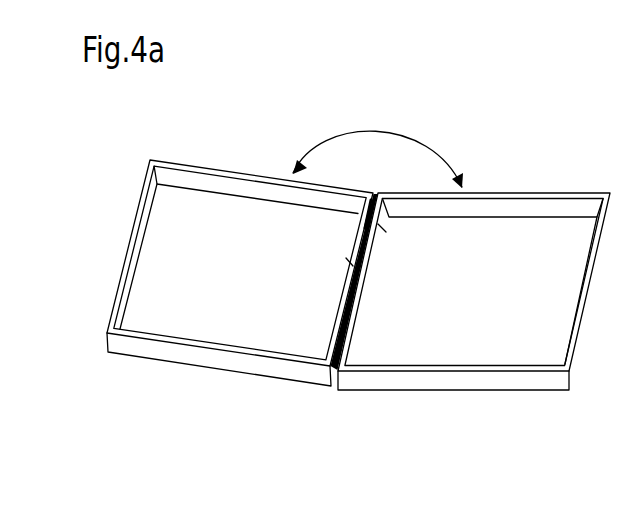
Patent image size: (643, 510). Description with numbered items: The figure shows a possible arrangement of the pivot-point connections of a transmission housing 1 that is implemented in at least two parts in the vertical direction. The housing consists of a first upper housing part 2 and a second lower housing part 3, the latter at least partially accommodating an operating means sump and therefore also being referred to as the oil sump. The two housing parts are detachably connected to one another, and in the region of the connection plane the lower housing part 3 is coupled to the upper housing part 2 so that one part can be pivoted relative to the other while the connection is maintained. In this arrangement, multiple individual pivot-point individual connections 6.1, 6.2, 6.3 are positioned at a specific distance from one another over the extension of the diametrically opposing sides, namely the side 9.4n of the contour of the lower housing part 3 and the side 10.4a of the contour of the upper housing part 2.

The transmission housing 1 is at (484, 109).
The first upper housing part 2 is at (250, 175).
The second lower housing part 3 is at (582, 194).
The pivot-point individual connection 6.1 is at (352, 220).
The pivot-point individual connection 6.2 is at (360, 282).
The pivot-point individual connection 6.3 is at (350, 348).
The side of the lower housing part contour 9.4n is at (366, 228).
The side of the upper housing part contour 10.4a is at (350, 262).